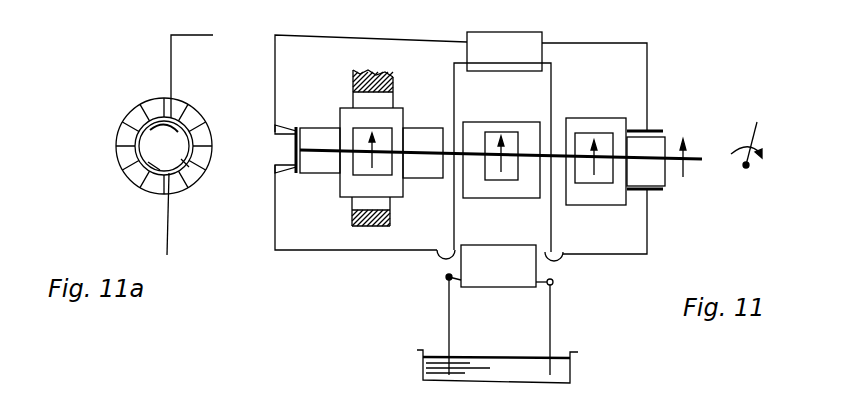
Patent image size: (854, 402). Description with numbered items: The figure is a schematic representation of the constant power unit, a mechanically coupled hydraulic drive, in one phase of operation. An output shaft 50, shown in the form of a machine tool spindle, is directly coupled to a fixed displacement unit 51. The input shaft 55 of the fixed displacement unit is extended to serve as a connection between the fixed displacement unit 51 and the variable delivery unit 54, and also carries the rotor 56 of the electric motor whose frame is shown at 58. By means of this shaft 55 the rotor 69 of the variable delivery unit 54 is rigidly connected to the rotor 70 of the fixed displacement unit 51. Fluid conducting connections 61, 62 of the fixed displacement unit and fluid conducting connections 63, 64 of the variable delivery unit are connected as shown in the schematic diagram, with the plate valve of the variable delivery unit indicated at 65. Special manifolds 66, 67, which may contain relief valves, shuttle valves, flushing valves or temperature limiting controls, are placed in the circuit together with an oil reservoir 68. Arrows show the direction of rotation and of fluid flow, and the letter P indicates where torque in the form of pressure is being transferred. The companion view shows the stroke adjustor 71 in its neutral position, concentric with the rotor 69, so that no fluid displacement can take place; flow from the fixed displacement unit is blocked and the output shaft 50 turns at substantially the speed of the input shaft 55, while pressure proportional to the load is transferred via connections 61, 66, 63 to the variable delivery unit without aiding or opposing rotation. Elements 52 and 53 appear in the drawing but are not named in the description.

In FIG. 11, the output shaft 50 is at (702, 160).
In FIG. 11, the fixed displacement unit 51 is at (586, 119).
In FIG. 11, the end plates 52 is at (653, 131).
In FIG. 11, the shaft end block 53 is at (672, 135).
In FIG. 11, the variable delivery unit 54 is at (372, 110).
In FIG. 11, the input shaft 55 is at (455, 192).
In FIG. 11, the rotor 56 is at (496, 132).
In FIG. 11, the electric motor frame 58 is at (527, 123).
In FIG. 11, the fluid conducting connection 61 is at (648, 94).
In FIG. 11, the fluid conducting connection 62 is at (647, 212).
In FIG. 11, the fluid conducting connection 63 is at (279, 130).
In FIG. 11A, the fluid conducting connection 63 is at (171, 72).
In FIG. 11, the fluid conducting connection 64 is at (277, 170).
In FIG. 11A, the fluid conducting connection 64 is at (167, 228).
In FIG. 11, the plate valve 65 is at (296, 151).
In FIG. 11, the special manifold 66 is at (515, 42).
In FIG. 11, the special manifold 67 is at (465, 262).
In FIG. 11, the oil reservoir 68 is at (560, 370).
In FIG. 11, the rotor 69 is at (392, 178).
In FIG. 11A, the rotor 69 is at (131, 165).
In FIG. 11, the rotor 70 is at (580, 184).
In FIG. 11A, the stroke adjustor 71 is at (136, 118).